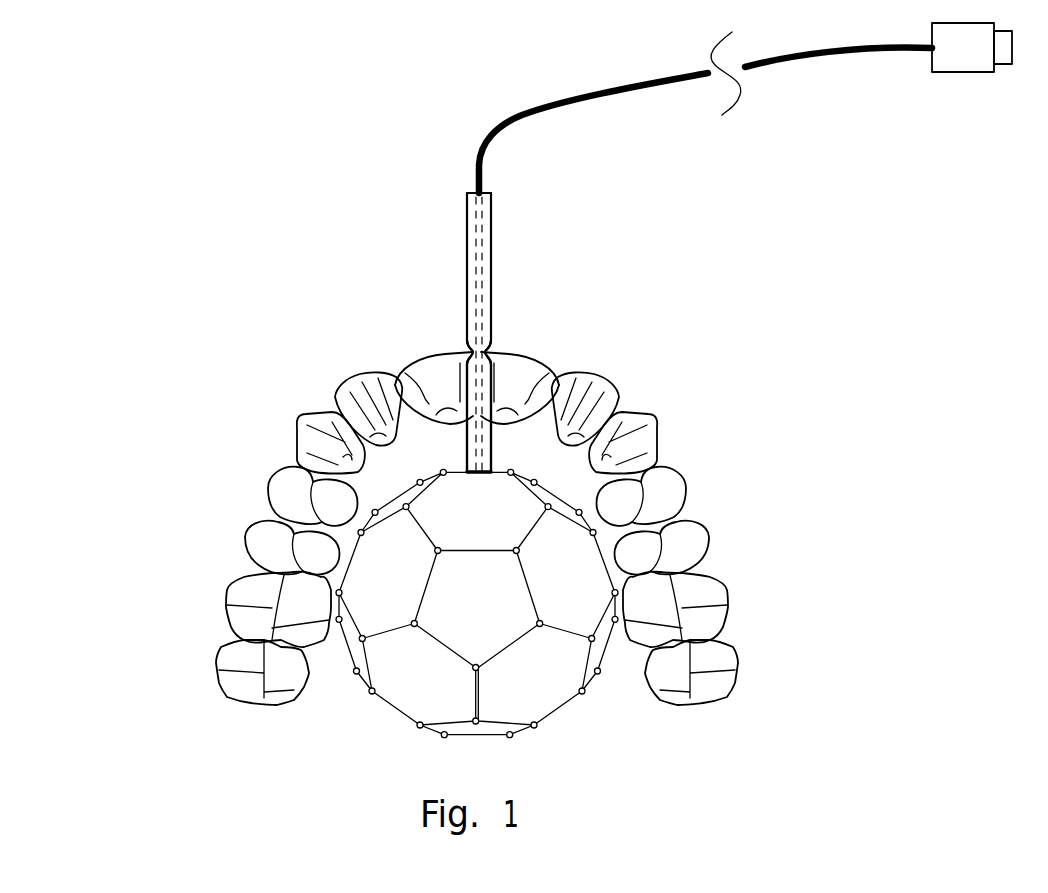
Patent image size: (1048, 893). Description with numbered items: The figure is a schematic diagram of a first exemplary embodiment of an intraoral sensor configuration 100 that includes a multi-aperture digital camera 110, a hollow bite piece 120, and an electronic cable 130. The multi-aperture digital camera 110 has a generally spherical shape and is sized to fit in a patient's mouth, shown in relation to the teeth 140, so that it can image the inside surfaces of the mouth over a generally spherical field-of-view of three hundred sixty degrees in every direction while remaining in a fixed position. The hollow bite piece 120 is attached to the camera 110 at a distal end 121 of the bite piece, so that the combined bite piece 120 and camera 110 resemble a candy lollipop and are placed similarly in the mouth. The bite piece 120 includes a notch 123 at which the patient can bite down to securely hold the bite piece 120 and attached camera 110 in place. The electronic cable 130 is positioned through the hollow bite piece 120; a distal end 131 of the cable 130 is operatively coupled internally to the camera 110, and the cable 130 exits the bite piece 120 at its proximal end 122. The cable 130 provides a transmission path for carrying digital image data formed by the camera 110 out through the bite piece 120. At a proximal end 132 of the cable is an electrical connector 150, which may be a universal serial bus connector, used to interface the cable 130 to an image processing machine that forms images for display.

The intraoral sensor configuration 100 is at (187, 180).
The multi-aperture digital camera 110 is at (392, 710).
The hollow bite piece 120 is at (465, 238).
The distal end of the bite piece 121 is at (468, 471).
The proximal end of the bite piece 122 is at (468, 193).
The notch 123 is at (486, 354).
The electronic cable 130 is at (545, 105).
The distal end of the electronic cable 131 is at (479, 475).
The proximal end of the cable 132 is at (930, 45).
The teeth 140 is at (725, 570).
The electrical connector 150 is at (958, 72).